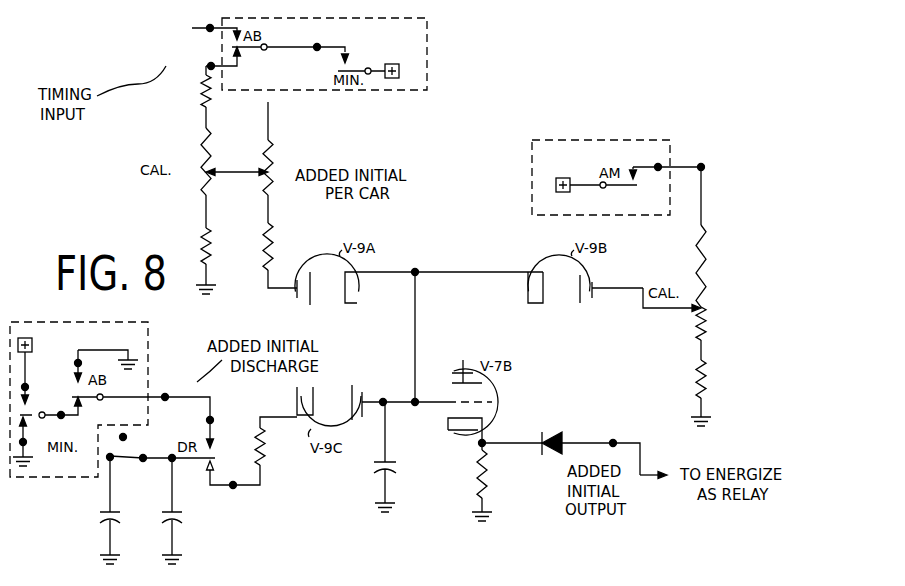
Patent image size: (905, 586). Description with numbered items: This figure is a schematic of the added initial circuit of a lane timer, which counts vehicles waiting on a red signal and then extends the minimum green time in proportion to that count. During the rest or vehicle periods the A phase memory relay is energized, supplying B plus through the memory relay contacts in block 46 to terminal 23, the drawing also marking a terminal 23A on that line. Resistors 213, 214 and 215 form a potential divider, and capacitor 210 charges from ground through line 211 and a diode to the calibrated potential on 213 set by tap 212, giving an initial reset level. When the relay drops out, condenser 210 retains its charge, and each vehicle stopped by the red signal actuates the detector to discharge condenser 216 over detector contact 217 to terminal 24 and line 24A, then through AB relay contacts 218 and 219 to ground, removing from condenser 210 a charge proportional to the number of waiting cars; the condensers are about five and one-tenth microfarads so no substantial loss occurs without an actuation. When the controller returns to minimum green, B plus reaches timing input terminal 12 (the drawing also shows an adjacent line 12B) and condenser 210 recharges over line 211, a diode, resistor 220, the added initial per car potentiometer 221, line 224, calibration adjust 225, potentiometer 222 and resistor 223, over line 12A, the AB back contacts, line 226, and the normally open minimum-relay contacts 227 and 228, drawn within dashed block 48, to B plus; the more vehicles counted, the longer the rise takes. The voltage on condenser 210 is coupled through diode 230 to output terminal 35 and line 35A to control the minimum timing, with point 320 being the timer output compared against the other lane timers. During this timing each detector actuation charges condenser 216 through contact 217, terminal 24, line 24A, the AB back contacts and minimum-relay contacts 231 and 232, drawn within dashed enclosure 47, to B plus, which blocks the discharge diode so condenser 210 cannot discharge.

The timing input terminal 12 is at (205, 66).
The line 12A is at (285, 68).
The timing input contact 12B is at (207, 27).
The timing input switch unit 48 is at (429, 23).
The line 226 is at (291, 49).
The MIN contact 227 is at (345, 51).
The MIN contact 228 is at (363, 68).
The resistor 223 is at (200, 103).
The potentiometer 222 is at (202, 186).
The line 224 is at (220, 171).
The calibration adjust 225 is at (212, 176).
The added initial per car potentiometer 221 is at (272, 154).
The resistor 220 is at (270, 238).
The block 46 is at (535, 140).
The terminal 23 is at (705, 169).
The terminal 23A is at (665, 166).
The resistor 215 is at (705, 246).
The resistor 213 is at (706, 311).
The tap 212 is at (668, 311).
The resistor 214 is at (706, 383).
The line 211 is at (417, 343).
The capacitor 210 is at (391, 470).
The discharge switch unit 47 is at (147, 321).
The AB relay contact 219 is at (77, 360).
The MIN contact 232 is at (27, 390).
The MIN contact 231 is at (27, 415).
The AB relay contact 218 is at (80, 400).
The line 24A is at (143, 396).
The terminal 24 is at (168, 396).
The detector contact 217 is at (214, 428).
The condenser 216 is at (181, 522).
The diode 230 is at (553, 431).
The output terminal 35 is at (616, 433).
The line 35A is at (622, 488).
The point 320 is at (486, 446).